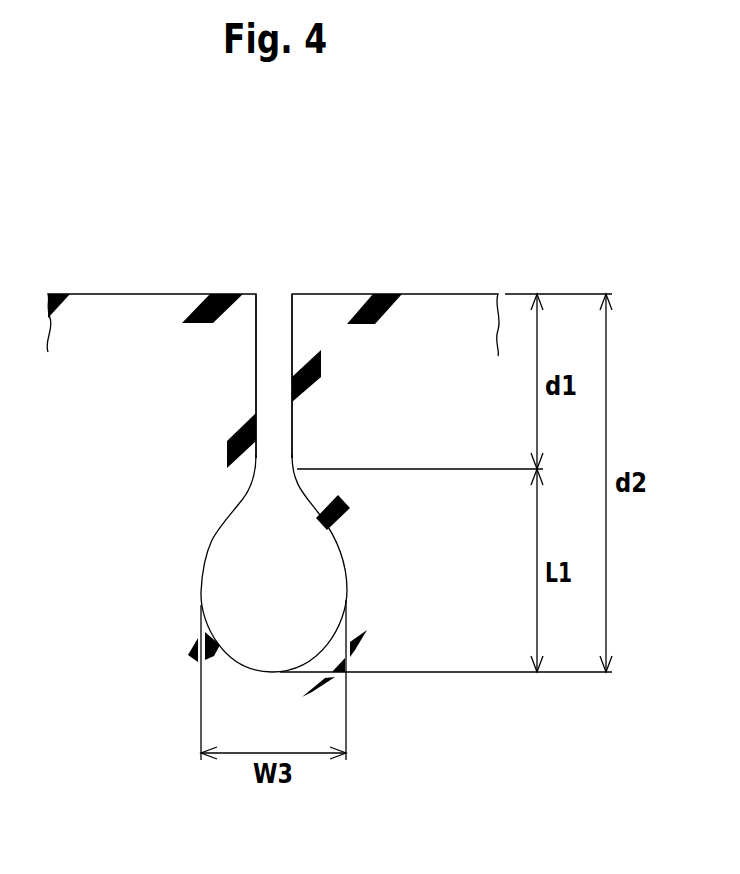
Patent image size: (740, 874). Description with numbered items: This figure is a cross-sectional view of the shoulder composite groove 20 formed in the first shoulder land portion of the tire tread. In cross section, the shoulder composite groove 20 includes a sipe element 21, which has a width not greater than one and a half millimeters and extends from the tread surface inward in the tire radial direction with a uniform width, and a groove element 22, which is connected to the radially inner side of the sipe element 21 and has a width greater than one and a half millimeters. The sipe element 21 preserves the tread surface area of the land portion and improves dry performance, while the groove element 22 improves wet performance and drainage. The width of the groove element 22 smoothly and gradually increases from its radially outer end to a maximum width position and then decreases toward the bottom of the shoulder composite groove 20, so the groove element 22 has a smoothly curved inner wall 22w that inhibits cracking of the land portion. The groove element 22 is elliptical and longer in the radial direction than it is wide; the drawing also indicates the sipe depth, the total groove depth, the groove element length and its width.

The shoulder composite groove 20 is at (257, 258).
The sipe element 21 is at (274, 400).
The groove element 22 is at (243, 585).
The inner wall 22w is at (214, 530).